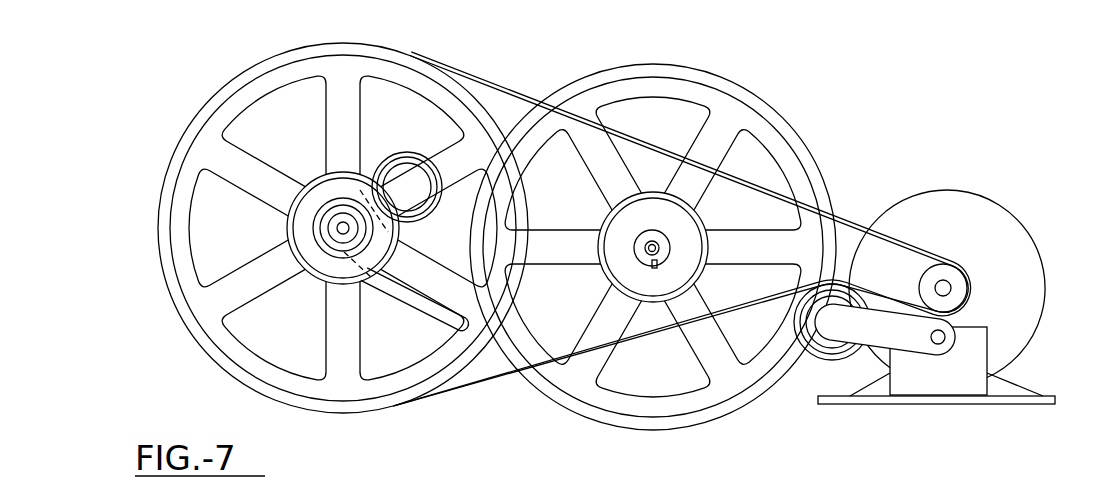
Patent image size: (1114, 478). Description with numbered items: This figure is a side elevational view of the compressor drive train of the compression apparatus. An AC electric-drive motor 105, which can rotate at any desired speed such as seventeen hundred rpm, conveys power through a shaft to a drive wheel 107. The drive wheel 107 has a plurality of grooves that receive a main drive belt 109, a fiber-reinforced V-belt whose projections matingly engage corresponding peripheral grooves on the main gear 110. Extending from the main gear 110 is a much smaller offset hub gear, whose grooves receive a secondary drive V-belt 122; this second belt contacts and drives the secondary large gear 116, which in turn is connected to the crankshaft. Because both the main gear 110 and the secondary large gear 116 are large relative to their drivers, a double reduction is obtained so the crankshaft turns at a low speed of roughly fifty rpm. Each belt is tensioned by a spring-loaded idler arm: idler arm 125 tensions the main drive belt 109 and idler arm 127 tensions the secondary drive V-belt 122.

The AC electric-drive motor 105 is at (992, 205).
The drive wheel 107 is at (965, 288).
The main drive belt 109 is at (852, 217).
The main gear 110 is at (208, 100).
The secondary large gear 116 is at (773, 113).
The secondary drive V-belt 122 is at (427, 320).
The spring-loaded idler arm 125 is at (887, 342).
The spring-loaded idler arm 127 is at (407, 150).